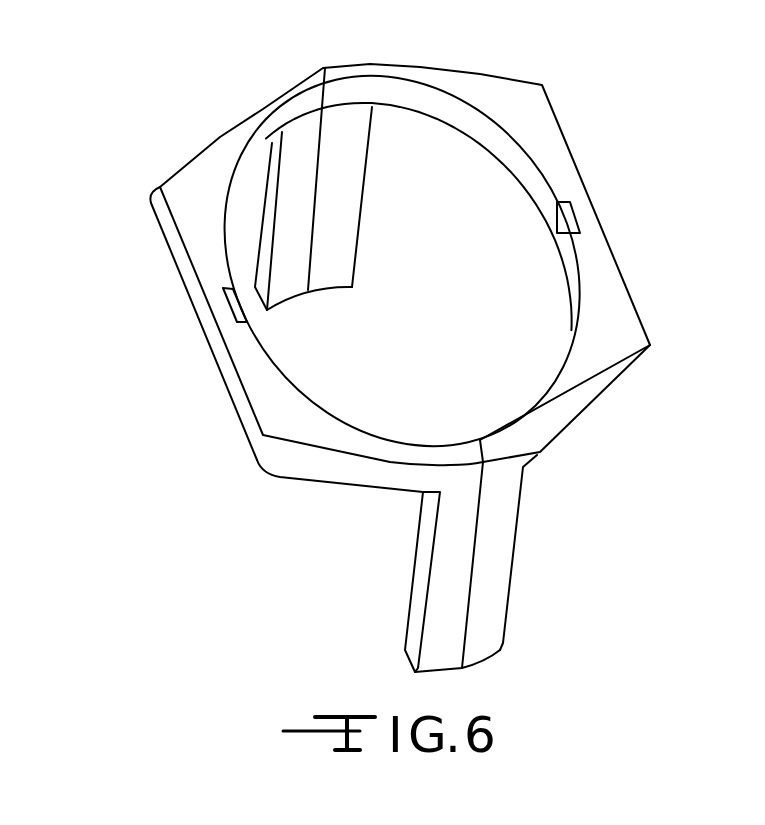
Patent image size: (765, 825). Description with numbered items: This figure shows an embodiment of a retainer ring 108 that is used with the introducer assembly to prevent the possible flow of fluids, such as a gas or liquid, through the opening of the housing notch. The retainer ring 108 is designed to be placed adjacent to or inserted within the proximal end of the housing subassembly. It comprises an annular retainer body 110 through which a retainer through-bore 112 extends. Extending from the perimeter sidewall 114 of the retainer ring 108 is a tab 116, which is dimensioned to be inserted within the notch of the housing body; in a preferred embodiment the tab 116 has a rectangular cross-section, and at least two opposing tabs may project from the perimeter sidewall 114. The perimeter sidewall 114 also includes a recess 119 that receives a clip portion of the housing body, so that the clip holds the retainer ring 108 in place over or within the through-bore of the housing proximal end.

The retainer ring 108 is at (197, 360).
The annular retainer body 110 is at (596, 360).
The retainer through-bore 112 is at (430, 165).
The perimeter sidewall 114 is at (313, 465).
The tab 116 is at (497, 563).
The recess 119 is at (569, 211).